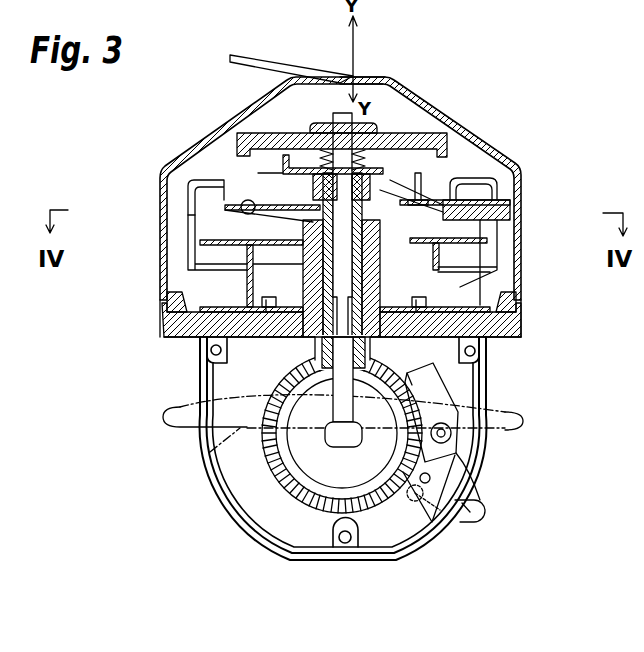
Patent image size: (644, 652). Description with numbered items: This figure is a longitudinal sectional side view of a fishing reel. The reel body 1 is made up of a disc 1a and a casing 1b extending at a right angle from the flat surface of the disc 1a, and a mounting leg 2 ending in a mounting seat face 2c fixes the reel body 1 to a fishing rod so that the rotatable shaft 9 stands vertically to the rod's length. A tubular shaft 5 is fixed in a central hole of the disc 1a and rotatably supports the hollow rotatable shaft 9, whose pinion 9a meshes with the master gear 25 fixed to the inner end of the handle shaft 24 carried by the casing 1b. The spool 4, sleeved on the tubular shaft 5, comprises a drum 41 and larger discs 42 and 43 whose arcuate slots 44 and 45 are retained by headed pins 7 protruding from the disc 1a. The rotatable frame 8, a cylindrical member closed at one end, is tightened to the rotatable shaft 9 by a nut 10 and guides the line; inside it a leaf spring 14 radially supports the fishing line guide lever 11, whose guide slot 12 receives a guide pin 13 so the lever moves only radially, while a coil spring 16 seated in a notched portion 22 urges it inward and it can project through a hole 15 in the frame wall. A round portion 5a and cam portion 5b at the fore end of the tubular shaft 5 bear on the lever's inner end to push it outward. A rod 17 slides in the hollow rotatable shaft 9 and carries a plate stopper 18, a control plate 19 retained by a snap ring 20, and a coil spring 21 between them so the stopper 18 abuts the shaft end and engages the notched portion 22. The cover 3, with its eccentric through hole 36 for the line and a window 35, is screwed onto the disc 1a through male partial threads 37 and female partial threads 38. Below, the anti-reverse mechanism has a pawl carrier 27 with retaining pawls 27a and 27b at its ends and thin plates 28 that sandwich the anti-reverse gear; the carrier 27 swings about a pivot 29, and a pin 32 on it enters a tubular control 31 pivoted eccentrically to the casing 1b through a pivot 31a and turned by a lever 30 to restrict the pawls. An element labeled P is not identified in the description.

The reel body 1 is at (233, 530).
The disc 1a is at (160, 335).
The casing 1b is at (214, 505).
The mounting leg 2 is at (223, 409).
The mounting seat face 2c is at (240, 428).
The cover 3 is at (517, 160).
The spool 4 is at (190, 195).
The tubular shaft 5 is at (380, 278).
The round portion 5a is at (312, 215).
The cam portion 5b is at (270, 207).
The headed pins 7 is at (252, 335).
The rotatable frame 8 is at (205, 218).
The rotatable shaft 9 is at (313, 263).
The pinion 9a is at (337, 427).
The nut 10 is at (425, 195).
The fishing line guide lever 11 is at (500, 227).
The guide slot 12 is at (493, 242).
The guide pin 13 is at (455, 195).
The leaf spring 14 is at (257, 255).
The hole 15 is at (508, 203).
The coil spring 16 is at (482, 193).
The rod 17 is at (307, 135).
The plate stopper 18 is at (250, 173).
The control plate 19 is at (277, 167).
The snap ring 20 is at (327, 120).
The coil spring 21 is at (373, 130).
The notched portion 22 is at (507, 160).
The handle shaft 24 is at (340, 445).
The master gear 25 is at (374, 508).
The pawl carrier 27 is at (445, 478).
The retaining pawl 27a is at (413, 492).
The retaining pawl 27b is at (410, 372).
The thin plates 28 is at (452, 436).
The pivot 29 is at (462, 468).
The lever 30 is at (483, 525).
The control 31 is at (405, 505).
The pivot 31a is at (440, 510).
The pin 32 is at (492, 505).
The window 35 is at (405, 83).
The through hole 36 is at (362, 76).
The male partial threads 37 is at (165, 303).
The female partial threads 38 is at (160, 310).
The drum 41 is at (247, 277).
The disc 42 is at (217, 307).
The disc 43 is at (222, 240).
The arcuate slots 44 is at (308, 335).
The arcuate slots 45 is at (342, 264).
The lever plate P is at (277, 60).